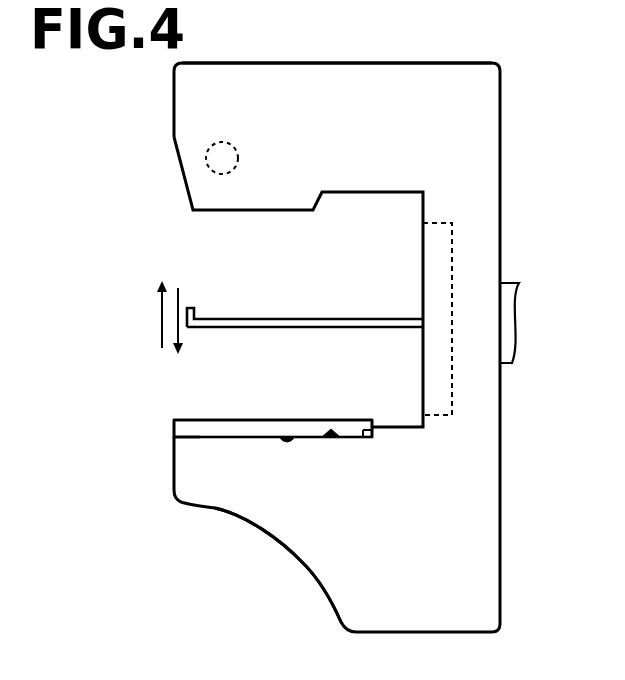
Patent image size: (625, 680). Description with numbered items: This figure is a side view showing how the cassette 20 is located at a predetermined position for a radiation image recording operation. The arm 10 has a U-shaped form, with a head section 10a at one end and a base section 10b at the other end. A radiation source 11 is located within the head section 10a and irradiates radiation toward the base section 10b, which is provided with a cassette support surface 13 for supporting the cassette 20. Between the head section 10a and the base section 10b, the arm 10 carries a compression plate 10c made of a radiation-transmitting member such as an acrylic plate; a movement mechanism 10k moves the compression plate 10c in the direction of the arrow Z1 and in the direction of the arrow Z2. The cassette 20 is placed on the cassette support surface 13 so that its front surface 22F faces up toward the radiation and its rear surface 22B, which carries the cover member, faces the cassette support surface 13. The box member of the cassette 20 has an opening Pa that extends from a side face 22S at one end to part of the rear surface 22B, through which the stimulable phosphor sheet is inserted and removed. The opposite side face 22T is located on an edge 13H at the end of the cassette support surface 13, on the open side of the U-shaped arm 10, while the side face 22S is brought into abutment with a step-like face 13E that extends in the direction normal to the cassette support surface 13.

The arm 10 is at (490, 62).
The head section 10a is at (265, 73).
The base section 10b is at (315, 560).
The compression plate 10c is at (300, 318).
The movement mechanism 10k is at (440, 222).
The radiation source 11 is at (237, 150).
The cassette support surface 13 is at (331, 429).
The step-like face 13E is at (364, 439).
The edge 13H is at (173, 436).
The cassette 20 is at (182, 414).
The front surface 22F is at (282, 420).
The rear surface 22B is at (287, 443).
The side face 22T is at (173, 428).
The side face 22S is at (372, 425).
The opening Pa is at (380, 436).
The direction of arrow Z1 is at (180, 310).
The direction of arrow Z2 is at (160, 322).